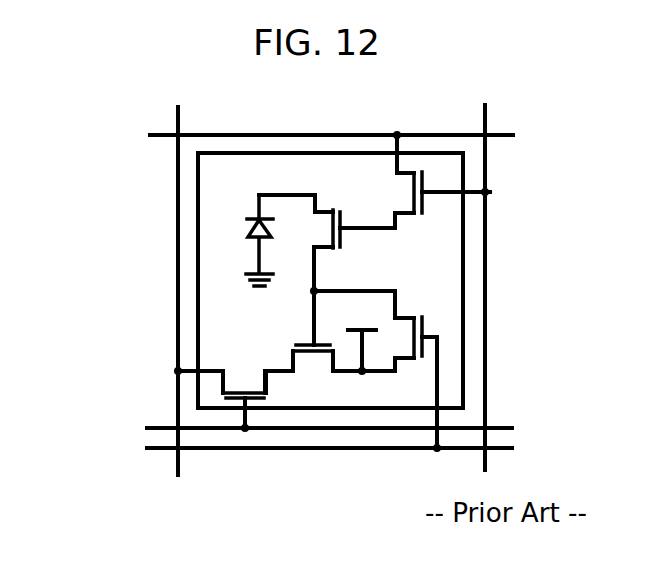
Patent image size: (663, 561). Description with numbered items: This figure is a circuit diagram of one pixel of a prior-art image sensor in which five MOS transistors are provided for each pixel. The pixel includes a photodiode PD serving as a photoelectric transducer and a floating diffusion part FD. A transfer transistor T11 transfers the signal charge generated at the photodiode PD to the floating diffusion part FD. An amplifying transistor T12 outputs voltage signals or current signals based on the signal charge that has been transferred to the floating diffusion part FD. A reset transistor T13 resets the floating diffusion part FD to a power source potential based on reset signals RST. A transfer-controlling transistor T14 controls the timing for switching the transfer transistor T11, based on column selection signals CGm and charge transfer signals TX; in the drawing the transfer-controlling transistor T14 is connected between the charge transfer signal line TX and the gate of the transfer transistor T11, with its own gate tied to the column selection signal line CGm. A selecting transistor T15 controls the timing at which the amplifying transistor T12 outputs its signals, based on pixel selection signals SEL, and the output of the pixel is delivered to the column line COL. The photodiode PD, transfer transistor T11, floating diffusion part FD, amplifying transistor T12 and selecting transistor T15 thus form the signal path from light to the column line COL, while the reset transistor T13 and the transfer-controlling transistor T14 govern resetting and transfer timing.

The transfer transistor T11 is at (342, 211).
The amplifying transistor T12 is at (309, 358).
The reset transistor T13 is at (437, 299).
The transfer-controlling transistor T14 is at (424, 216).
The selecting transistor T15 is at (268, 397).
The photodiode PD is at (247, 241).
The floating diffusion part FD is at (312, 294).
The charge transfer signals TX is at (303, 119).
The pixel selection signals SEL is at (283, 405).
The reset signals RST is at (277, 449).
The column line COL is at (202, 316).
The column selection signals CGm is at (520, 287).